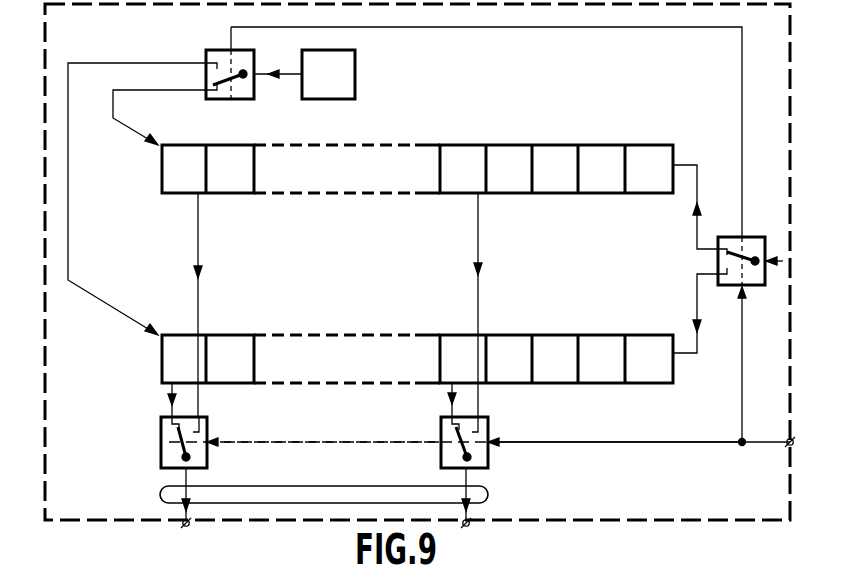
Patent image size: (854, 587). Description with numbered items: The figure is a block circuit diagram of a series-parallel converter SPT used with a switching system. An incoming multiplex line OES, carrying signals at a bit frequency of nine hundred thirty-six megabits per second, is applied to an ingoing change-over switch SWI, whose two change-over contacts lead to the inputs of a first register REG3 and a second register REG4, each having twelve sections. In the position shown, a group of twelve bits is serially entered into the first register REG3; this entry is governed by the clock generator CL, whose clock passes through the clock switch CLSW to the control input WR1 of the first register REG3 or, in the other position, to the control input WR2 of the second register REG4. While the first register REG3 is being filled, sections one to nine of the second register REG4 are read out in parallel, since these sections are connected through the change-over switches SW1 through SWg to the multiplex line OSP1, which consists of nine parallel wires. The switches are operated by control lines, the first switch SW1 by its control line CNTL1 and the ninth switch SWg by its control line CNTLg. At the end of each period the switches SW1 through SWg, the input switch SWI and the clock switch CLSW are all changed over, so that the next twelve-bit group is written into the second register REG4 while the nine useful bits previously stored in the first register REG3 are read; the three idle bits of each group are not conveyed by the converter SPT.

The series-parallel converter SPT is at (695, 522).
The clock generator CL is at (336, 103).
The clock switch CLSW is at (237, 102).
The control input of first register WR1 is at (390, 190).
The control input of second register WR2 is at (390, 374).
The first register REG3 is at (147, 167).
The second register REG4 is at (147, 357).
The ingoing change-over switch SWI is at (719, 259).
The incoming multiplex line OES is at (781, 258).
The first change-over switch SW1 is at (161, 443).
The ninth change-over switch SWg is at (488, 458).
The control line of first change-over switch CNTL1 is at (215, 441).
The control line of ninth change-over switch CNTLg is at (490, 438).
The multiplex line OSP1 is at (243, 486).